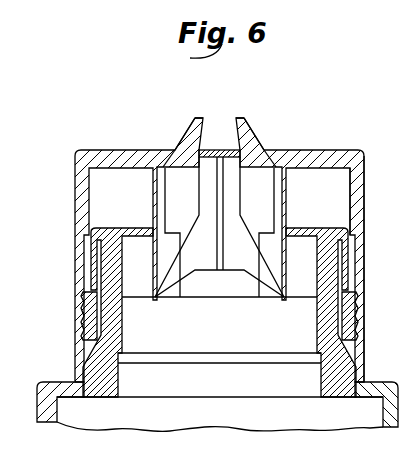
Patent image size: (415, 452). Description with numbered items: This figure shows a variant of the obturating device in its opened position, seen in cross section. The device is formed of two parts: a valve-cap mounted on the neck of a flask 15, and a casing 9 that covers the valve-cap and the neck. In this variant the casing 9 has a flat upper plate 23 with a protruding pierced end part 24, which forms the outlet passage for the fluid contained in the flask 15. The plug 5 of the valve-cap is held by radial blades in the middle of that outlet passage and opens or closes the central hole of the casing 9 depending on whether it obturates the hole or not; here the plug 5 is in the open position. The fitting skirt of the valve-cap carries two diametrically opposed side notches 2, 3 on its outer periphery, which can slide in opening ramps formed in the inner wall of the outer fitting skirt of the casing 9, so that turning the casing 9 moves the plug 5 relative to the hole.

The side notch 2 is at (351, 316).
The side notch 3 is at (81, 308).
The plug 5 is at (203, 152).
The casing 9 is at (357, 206).
The flask 15 is at (330, 281).
The flat upper plate 23 is at (312, 150).
The protruding pierced end part 24 is at (247, 130).